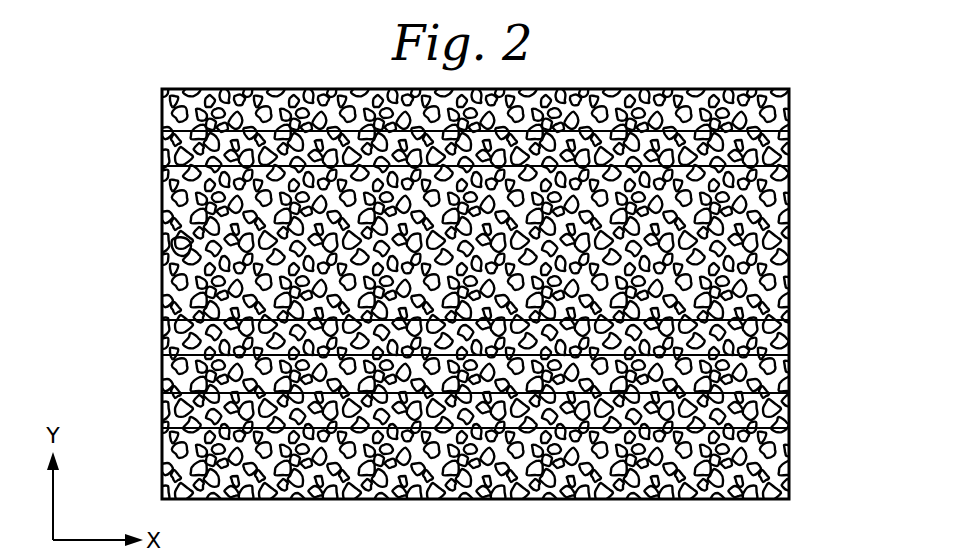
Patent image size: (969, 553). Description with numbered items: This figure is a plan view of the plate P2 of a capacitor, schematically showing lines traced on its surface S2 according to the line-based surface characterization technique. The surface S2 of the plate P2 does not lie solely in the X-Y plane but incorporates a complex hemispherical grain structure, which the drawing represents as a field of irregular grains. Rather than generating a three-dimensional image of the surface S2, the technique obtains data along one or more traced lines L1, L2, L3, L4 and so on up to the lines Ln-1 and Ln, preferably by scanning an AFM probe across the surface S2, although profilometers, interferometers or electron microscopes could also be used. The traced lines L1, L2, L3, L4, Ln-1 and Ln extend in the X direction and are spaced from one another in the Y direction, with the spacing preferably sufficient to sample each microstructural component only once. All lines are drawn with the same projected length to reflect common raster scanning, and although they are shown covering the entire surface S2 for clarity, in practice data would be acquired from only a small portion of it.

The plate P2 is at (165, 155).
The surface S2 is at (174, 246).
The traced line Ln is at (792, 113).
The traced line Ln-1 is at (792, 163).
The traced line L4 is at (790, 293).
The traced line L3 is at (788, 340).
The traced line L2 is at (790, 377).
The traced line L1 is at (785, 404).